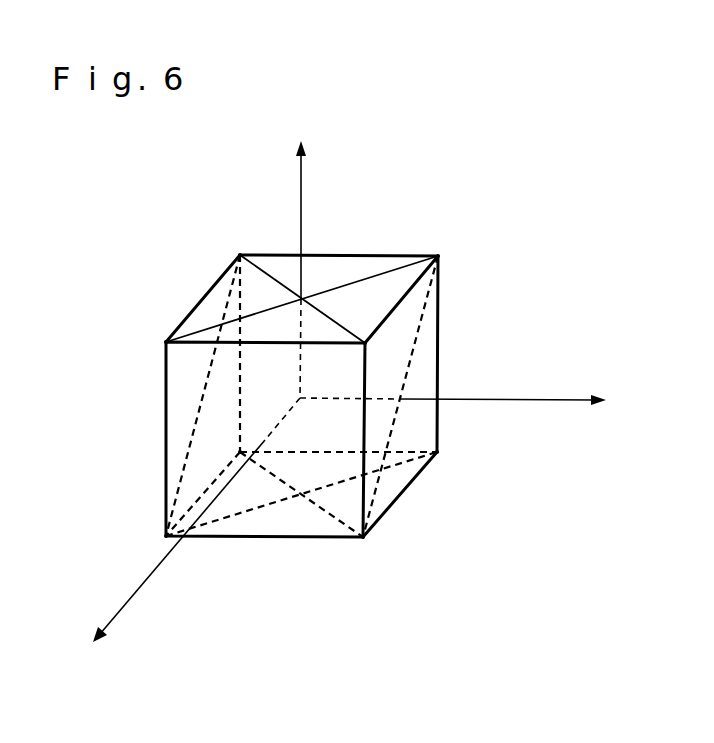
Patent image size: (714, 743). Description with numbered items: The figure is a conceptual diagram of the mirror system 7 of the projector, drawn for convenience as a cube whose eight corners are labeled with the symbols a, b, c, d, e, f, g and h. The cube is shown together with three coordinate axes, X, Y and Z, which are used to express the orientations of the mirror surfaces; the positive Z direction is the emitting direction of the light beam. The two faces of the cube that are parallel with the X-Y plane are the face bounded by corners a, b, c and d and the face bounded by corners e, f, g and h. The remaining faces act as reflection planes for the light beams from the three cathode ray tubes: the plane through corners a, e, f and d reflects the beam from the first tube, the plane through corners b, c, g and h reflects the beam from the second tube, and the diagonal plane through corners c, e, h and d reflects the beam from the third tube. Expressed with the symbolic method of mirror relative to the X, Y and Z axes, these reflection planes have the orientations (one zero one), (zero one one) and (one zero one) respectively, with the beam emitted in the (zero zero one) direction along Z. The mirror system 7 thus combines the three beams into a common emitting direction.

The mirror system 7 is at (302, 372).
The X coordinate axis X is at (453, 403).
The Y coordinate axis Y is at (285, 266).
The Z coordinate axis Z is at (173, 525).
The corner a is at (156, 341).
The corner b is at (379, 352).
The corner c is at (374, 545).
The corner d is at (155, 536).
The corner e is at (441, 243).
The corner f is at (448, 453).
The corner g is at (230, 444).
The corner h is at (240, 241).